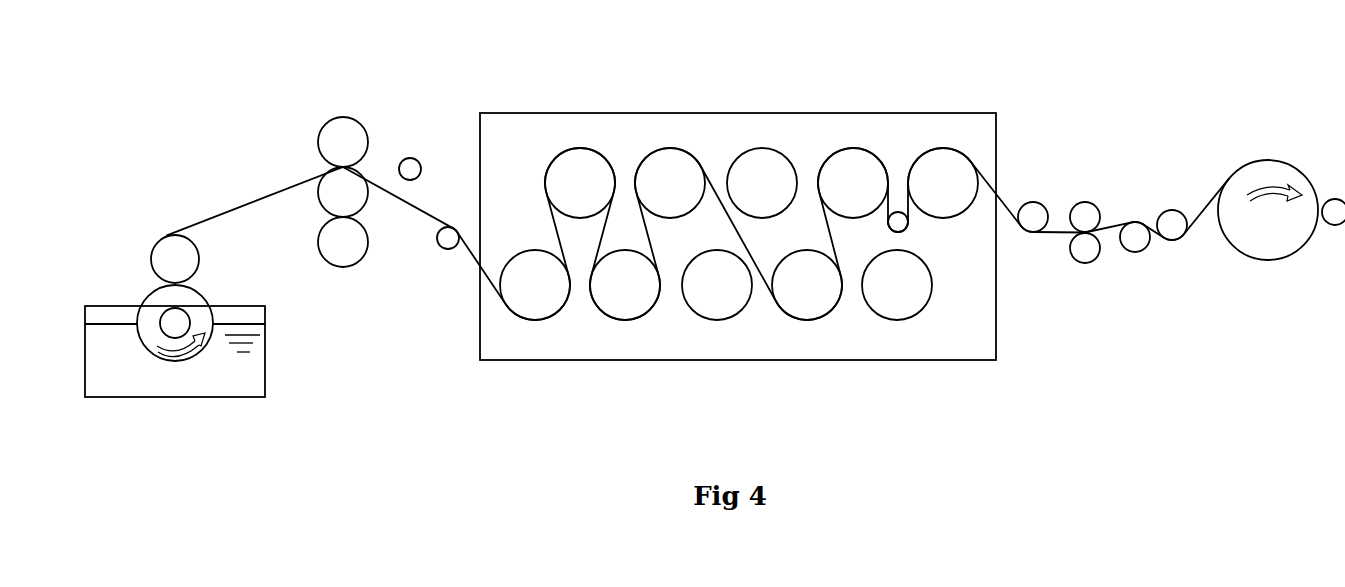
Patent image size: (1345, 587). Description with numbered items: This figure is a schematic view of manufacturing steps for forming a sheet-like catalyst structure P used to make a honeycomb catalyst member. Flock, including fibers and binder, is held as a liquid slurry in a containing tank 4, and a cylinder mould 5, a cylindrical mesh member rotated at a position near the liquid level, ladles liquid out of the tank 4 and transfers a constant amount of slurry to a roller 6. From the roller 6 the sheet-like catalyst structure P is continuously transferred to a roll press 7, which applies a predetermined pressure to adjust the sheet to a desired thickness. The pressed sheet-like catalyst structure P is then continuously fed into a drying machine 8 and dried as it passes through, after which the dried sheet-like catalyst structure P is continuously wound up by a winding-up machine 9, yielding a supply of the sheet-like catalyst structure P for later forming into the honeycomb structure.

The containing tank 4 is at (160, 398).
The cylinder mould 5 is at (156, 298).
The roller 6 is at (197, 258).
The roll press 7 is at (351, 116).
The drying machine 8 is at (918, 112).
The winding-up machine 9 is at (1283, 160).
The sheet-like catalyst structure P is at (224, 212).